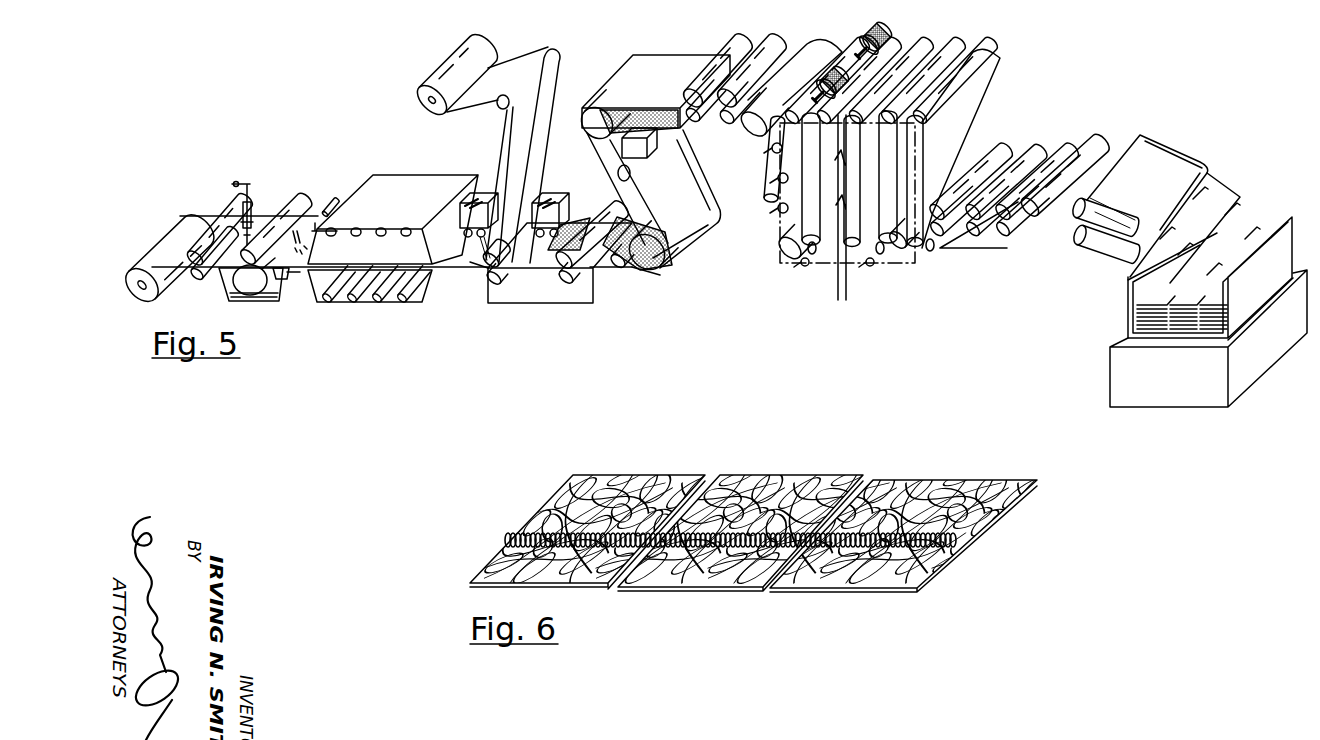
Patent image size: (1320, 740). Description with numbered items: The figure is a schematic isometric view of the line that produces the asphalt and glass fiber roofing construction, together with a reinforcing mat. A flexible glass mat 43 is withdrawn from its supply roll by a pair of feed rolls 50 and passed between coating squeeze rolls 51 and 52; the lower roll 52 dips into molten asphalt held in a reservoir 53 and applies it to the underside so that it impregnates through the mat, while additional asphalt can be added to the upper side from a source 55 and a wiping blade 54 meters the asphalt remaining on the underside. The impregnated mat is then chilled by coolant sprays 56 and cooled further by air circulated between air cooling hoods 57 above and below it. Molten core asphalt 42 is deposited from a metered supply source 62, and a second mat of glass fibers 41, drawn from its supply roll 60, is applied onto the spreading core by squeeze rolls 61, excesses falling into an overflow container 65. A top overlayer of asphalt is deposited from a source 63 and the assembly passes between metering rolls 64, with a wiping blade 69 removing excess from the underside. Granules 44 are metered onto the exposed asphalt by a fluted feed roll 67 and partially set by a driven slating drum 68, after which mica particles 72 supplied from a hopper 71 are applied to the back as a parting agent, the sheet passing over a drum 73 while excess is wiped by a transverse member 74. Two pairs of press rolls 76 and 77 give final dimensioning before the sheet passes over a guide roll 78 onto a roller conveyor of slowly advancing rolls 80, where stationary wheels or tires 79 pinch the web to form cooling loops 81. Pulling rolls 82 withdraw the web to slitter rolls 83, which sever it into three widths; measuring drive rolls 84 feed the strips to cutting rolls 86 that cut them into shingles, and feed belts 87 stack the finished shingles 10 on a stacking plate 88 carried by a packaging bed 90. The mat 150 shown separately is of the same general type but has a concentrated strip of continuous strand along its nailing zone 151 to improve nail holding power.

In FIG. 5, the laminated product 10 is at (1233, 177).
In FIG. 5, the mat of glass fibers 41 is at (503, 138).
In FIG. 5, the molten asphalt 42 is at (476, 272).
In FIG. 5, the flexible glass mat 43 is at (130, 294).
In FIG. 5, the granules 44 is at (645, 274).
In FIG. 5, the feed rolls 50 is at (236, 198).
In FIG. 5, the coating squeeze roll 51 is at (290, 200).
In FIG. 5, the coating squeeze roll 52 is at (240, 287).
In FIG. 5, the reservoir 53 is at (258, 303).
In FIG. 5, the wiping knife or blade 54 is at (306, 272).
In FIG. 5, the source of asphalt 55 is at (247, 185).
In FIG. 5, the sprays 56 is at (323, 200).
In FIG. 5, the air cooling hoods 57 is at (390, 178).
In FIG. 5, the supply roll 60 is at (502, 112).
In FIG. 5, the squeeze rolls 61 is at (520, 214).
In FIG. 5, the metered asphalt supply source 62 is at (472, 194).
In FIG. 5, the source of asphalt 63 is at (546, 194).
In FIG. 5, the metering rolls 64 is at (560, 284).
In FIG. 5, the overflow container 65 is at (492, 287).
In FIG. 5, the fluted feed roll 67 is at (620, 270).
In FIG. 5, the slating drum 68 is at (665, 252).
In FIG. 5, the wiping blade 69 is at (606, 272).
In FIG. 5, the hopper 71 is at (676, 120).
In FIG. 5, the mica particles 72 is at (626, 176).
In FIG. 5, the roll 73 is at (582, 122).
In FIG. 5, the transverse member 74 is at (620, 160).
In FIG. 5, the press rolls 76 is at (738, 52).
In FIG. 5, the press rolls 77 is at (778, 46).
In FIG. 5, the guide roll 78 is at (751, 139).
In FIG. 5, the wheels or tires 79 is at (860, 52).
In FIG. 5, the rolls 80 is at (810, 266).
In FIG. 5, the loops 81 is at (780, 210).
In FIG. 5, the pulling rolls 82 is at (931, 236).
In FIG. 5, the slitter rolls 83 is at (1044, 143).
In FIG. 5, the measuring drive rolls 84 is at (1072, 141).
In FIG. 5, the cutting rolls 86 is at (1112, 134).
In FIG. 5, the feed belts 87 is at (1178, 150).
In FIG. 5, the stacking plate 88 is at (1293, 216).
In FIG. 5, the packaging bed 90 is at (1110, 373).
In FIG. 6, the mat 150 is at (789, 471).
In FIG. 6, the nailing zone 151 is at (942, 568).